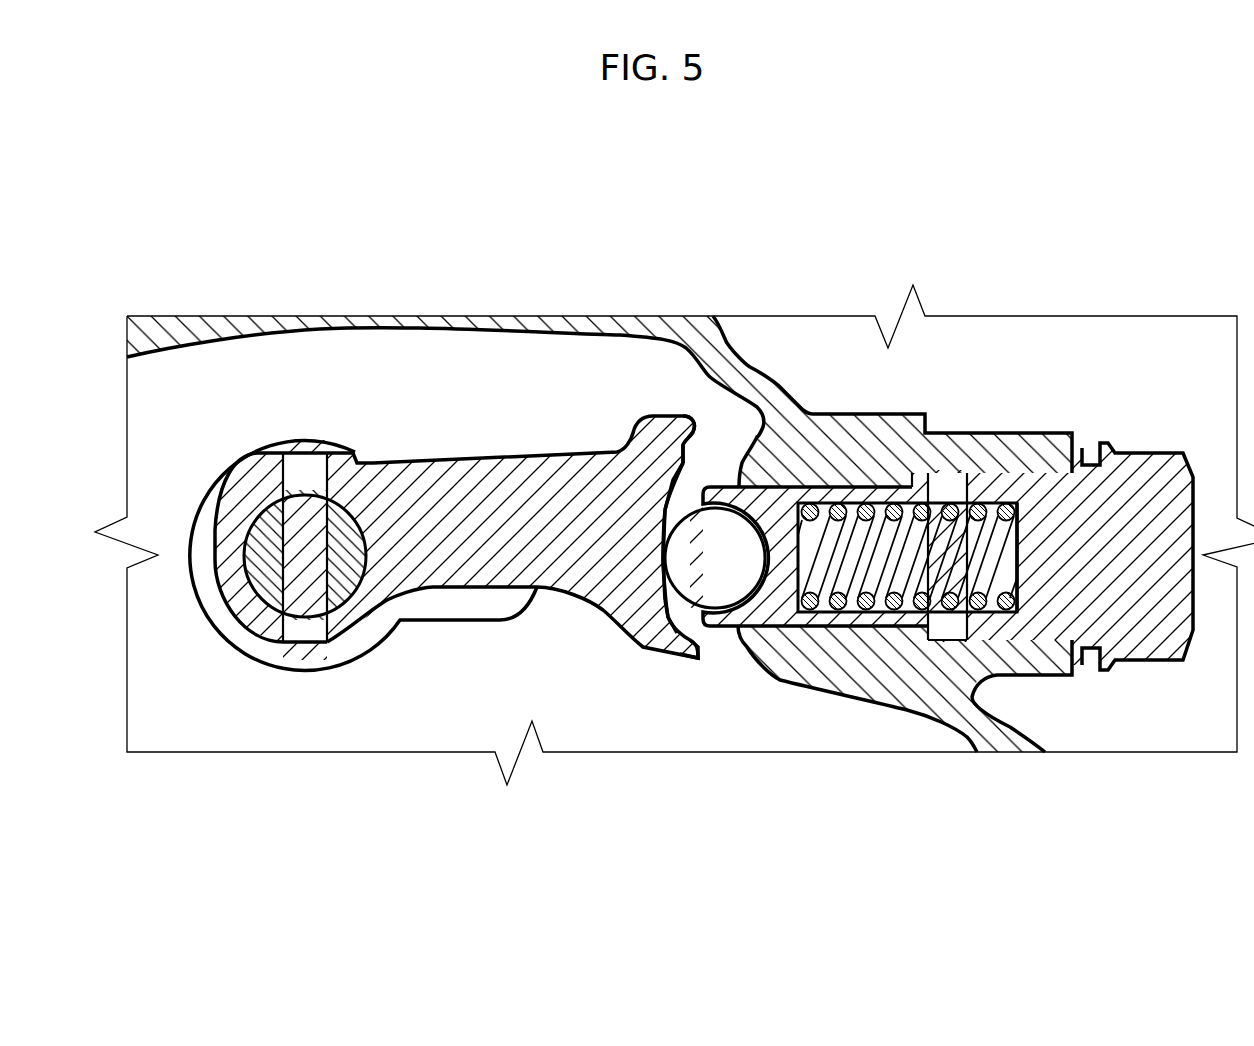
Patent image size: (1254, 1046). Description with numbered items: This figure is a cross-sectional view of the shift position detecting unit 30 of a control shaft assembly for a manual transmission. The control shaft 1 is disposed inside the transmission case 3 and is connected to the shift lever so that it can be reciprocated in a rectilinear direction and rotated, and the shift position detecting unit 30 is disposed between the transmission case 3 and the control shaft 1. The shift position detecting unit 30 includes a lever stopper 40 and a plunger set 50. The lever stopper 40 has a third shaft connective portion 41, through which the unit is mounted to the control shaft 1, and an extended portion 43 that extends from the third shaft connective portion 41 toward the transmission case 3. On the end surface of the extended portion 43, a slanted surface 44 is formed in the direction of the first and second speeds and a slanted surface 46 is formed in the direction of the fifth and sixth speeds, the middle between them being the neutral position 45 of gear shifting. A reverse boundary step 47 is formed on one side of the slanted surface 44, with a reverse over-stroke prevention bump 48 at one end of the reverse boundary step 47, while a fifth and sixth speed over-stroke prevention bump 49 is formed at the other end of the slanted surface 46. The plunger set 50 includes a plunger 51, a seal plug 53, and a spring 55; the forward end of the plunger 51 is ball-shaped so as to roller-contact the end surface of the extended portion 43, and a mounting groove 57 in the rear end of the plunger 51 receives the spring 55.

The control shaft 1 is at (265, 567).
The transmission case 3 is at (660, 333).
The shift position detecting unit 30 is at (482, 543).
The lever stopper 40 is at (455, 627).
The third shaft connective portion 41 is at (267, 620).
The extended portion 43 is at (447, 560).
The slanted surface 44 is at (673, 505).
The neutral position 45 is at (685, 565).
The slanted surface 46 is at (696, 621).
The reverse boundary step 47 is at (689, 454).
The reverse over-stroke prevention bump 48 is at (698, 412).
The fifth and sixth speed over-stroke prevention bump 49 is at (718, 668).
The plunger set 50 is at (937, 600).
The plunger 51 is at (787, 627).
The seal plug 53 is at (1027, 623).
The spring 55 is at (898, 630).
The mounting groove 57 is at (802, 555).